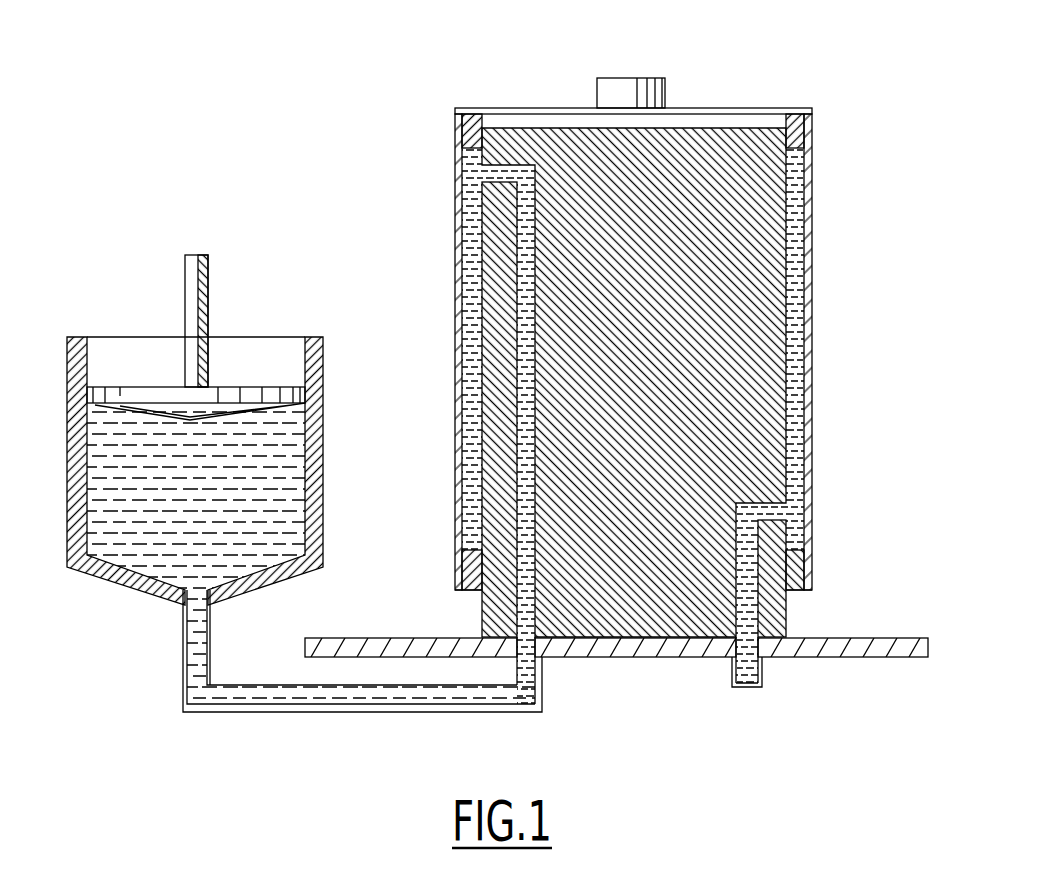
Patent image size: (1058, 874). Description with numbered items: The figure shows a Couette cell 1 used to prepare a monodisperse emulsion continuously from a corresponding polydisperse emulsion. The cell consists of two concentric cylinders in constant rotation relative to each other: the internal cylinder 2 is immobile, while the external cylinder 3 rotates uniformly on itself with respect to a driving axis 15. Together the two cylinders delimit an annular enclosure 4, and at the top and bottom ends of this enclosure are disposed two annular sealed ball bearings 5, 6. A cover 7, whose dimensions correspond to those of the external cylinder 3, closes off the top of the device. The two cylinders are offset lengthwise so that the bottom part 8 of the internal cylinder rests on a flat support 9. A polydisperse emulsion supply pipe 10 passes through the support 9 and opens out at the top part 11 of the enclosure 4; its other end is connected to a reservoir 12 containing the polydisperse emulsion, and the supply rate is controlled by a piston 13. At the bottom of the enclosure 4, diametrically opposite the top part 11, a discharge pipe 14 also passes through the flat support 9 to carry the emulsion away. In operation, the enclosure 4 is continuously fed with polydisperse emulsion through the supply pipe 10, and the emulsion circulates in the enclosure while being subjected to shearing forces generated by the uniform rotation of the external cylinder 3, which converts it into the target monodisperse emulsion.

The Couette cell 1 is at (441, 192).
The internal cylinder 2 is at (480, 280).
The external cylinder 3 is at (457, 313).
The annular enclosure 4 is at (470, 215).
The annular sealed ball bearing 5 is at (795, 107).
The annular sealed ball bearing 6 is at (803, 577).
The cover 7 is at (722, 104).
The bottom part of the internal cylinder 8 is at (777, 623).
The flat support 9 is at (307, 657).
The polydisperse emulsion supply pipe 10 is at (392, 717).
The top part of the enclosure 11 is at (455, 167).
The reservoir 12 is at (222, 430).
The piston 13 is at (208, 323).
The discharge pipe 14 is at (762, 667).
The driving axis 15 is at (668, 93).